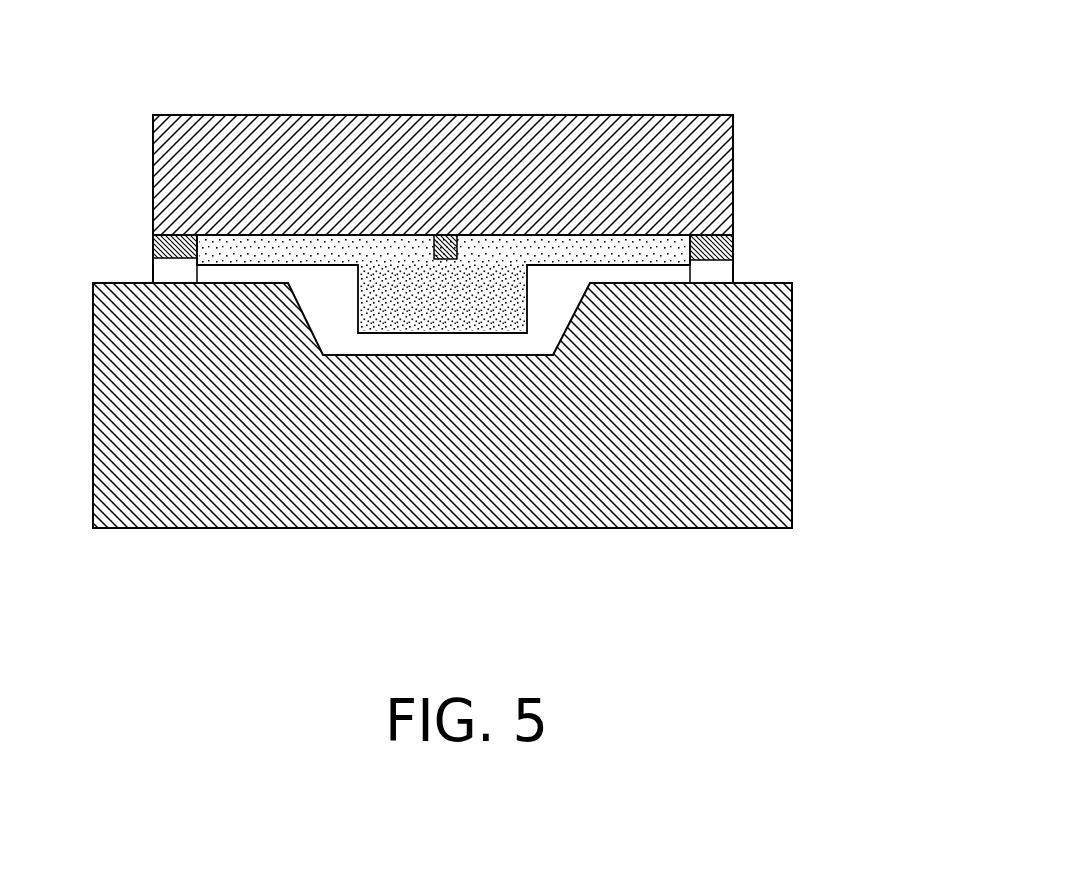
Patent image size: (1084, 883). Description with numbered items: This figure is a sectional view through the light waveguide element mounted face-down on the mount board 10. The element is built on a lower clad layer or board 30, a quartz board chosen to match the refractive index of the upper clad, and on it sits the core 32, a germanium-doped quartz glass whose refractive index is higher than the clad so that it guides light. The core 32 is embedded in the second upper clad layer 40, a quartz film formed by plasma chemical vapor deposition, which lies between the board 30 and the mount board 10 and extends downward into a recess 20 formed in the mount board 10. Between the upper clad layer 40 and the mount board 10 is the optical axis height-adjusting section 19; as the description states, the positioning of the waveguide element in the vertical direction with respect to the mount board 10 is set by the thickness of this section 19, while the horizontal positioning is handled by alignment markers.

The mount board 10 is at (792, 466).
The trench 20 is at (553, 357).
The lower clad layer or board 30 is at (153, 180).
The core 32 is at (457, 240).
The second upper clad layer 40 is at (570, 253).
The optical axis height-adjusting section 19 is at (740, 283).